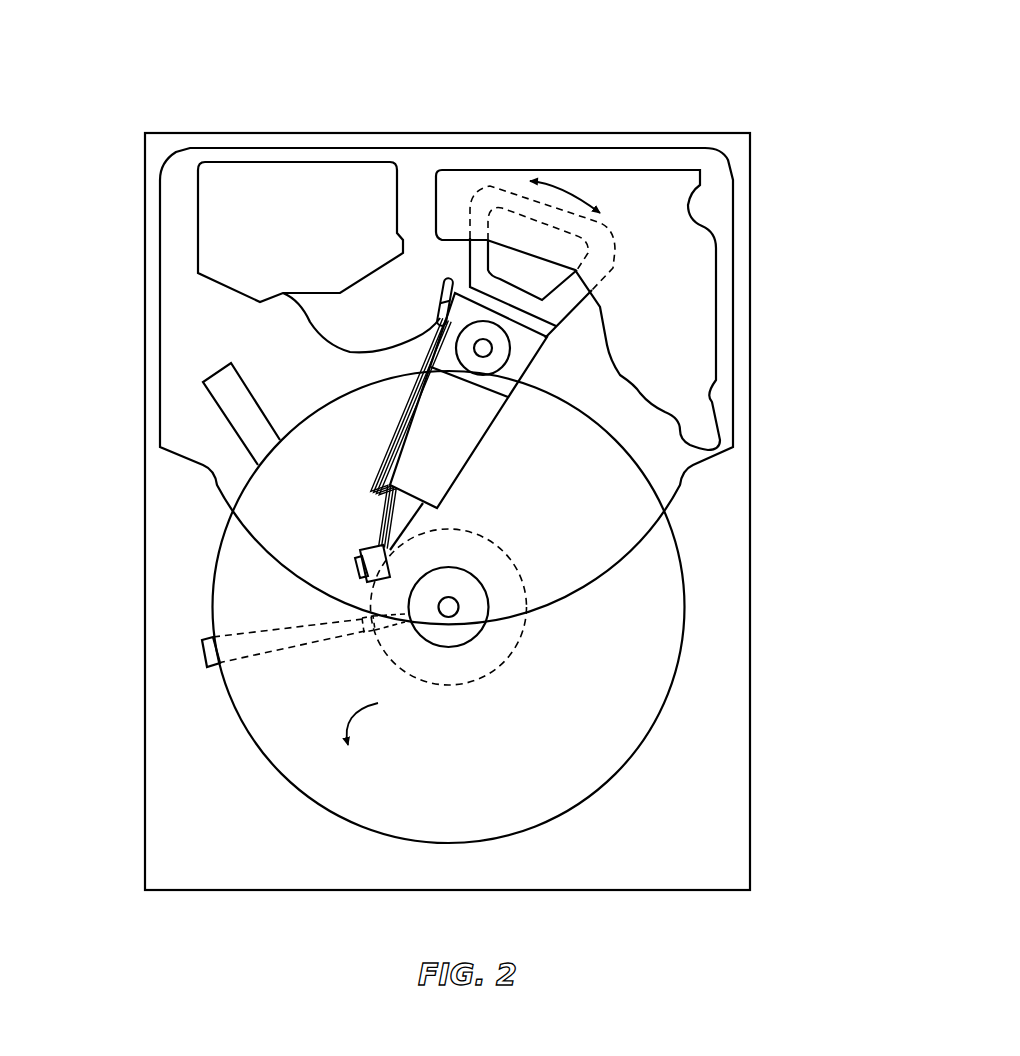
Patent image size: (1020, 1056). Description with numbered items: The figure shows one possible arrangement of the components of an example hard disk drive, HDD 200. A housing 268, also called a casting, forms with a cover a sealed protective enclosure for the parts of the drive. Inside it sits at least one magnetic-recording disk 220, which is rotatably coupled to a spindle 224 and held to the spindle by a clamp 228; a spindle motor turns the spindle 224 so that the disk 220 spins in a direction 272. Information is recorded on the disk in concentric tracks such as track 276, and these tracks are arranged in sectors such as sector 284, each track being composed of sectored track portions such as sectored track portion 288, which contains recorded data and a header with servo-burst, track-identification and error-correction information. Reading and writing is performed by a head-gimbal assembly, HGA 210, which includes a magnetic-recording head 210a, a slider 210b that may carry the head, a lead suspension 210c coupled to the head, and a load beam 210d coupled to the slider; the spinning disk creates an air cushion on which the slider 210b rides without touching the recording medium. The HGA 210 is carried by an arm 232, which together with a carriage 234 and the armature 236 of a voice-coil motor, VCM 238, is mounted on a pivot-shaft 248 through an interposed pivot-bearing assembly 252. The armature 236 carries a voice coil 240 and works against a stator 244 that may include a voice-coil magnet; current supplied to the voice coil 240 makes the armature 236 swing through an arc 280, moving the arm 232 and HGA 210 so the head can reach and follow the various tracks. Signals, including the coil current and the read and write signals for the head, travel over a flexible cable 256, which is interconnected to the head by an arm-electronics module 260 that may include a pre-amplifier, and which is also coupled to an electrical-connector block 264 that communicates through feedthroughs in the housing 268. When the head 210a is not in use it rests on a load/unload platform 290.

The hard disk drive 200 is at (150, 98).
The housing 268 is at (738, 145).
The electrical-connector block 264 is at (227, 210).
The flexible cable 256 is at (318, 320).
The arm-electronics module 260 is at (440, 316).
The load/unload platform 290 is at (215, 377).
The stator 244 is at (697, 253).
The voice-coil motor 238 is at (493, 189).
The armature 236 is at (467, 268).
The voice coil 240 is at (477, 243).
The arc 280 is at (557, 190).
The arm 232 is at (445, 465).
The carriage 234 is at (503, 385).
The pivot-shaft 248 is at (486, 348).
The pivot-bearing assembly 252 is at (496, 359).
The head-gimbal assembly 210 is at (228, 450).
The magnetic-recording head 210a is at (373, 567).
The slider 210b is at (358, 552).
The lead suspension 210c is at (383, 527).
The load beam 210d is at (403, 512).
The magnetic-recording disk 220 is at (668, 556).
The spindle 224 is at (459, 608).
The clamp 228 is at (470, 625).
The track 276 is at (520, 563).
The direction 272 is at (381, 720).
The sector 284 is at (205, 648).
The sectored track portion 288 is at (360, 620).